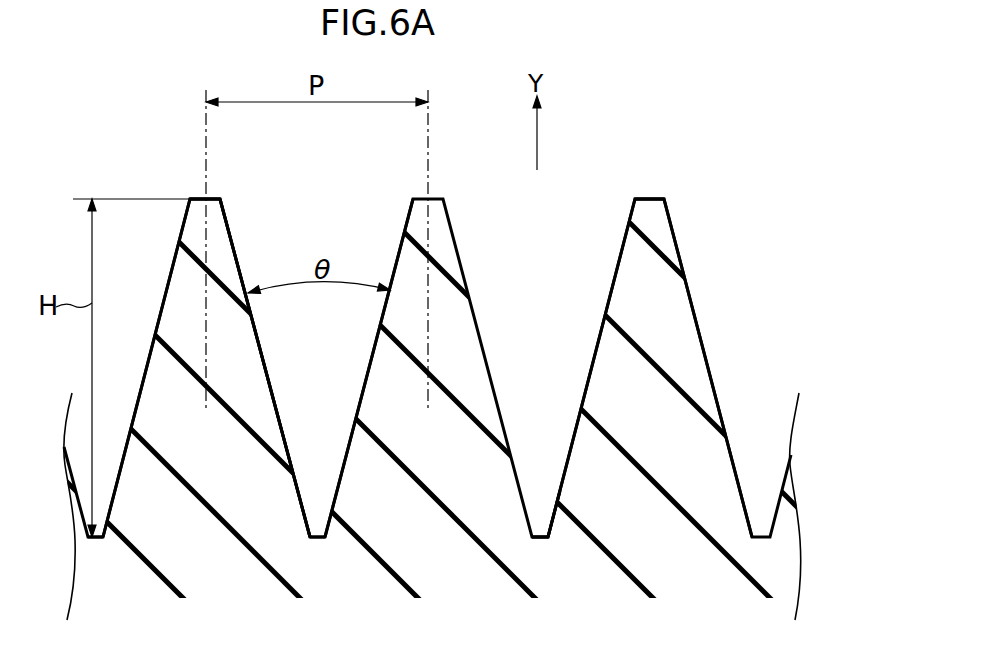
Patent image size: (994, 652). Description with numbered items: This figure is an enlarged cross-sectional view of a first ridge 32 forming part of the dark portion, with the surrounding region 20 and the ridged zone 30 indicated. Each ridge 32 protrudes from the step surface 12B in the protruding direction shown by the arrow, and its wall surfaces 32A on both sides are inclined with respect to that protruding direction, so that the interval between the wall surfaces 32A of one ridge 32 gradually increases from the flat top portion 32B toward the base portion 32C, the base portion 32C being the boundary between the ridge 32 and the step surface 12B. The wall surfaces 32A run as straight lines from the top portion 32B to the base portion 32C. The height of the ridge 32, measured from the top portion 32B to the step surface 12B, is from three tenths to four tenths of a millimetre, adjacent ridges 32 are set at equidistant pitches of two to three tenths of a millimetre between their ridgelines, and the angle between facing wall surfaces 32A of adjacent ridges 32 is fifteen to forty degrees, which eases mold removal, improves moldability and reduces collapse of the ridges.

The sealing member / body 20 is at (772, 198).
The toothed portion 30 is at (752, 305).
The ridge 32 is at (190, 199).
The wall surface 32A is at (228, 223).
The top portion 32B is at (207, 199).
The base portion 32C is at (552, 530).
The step surface 12B is at (128, 527).